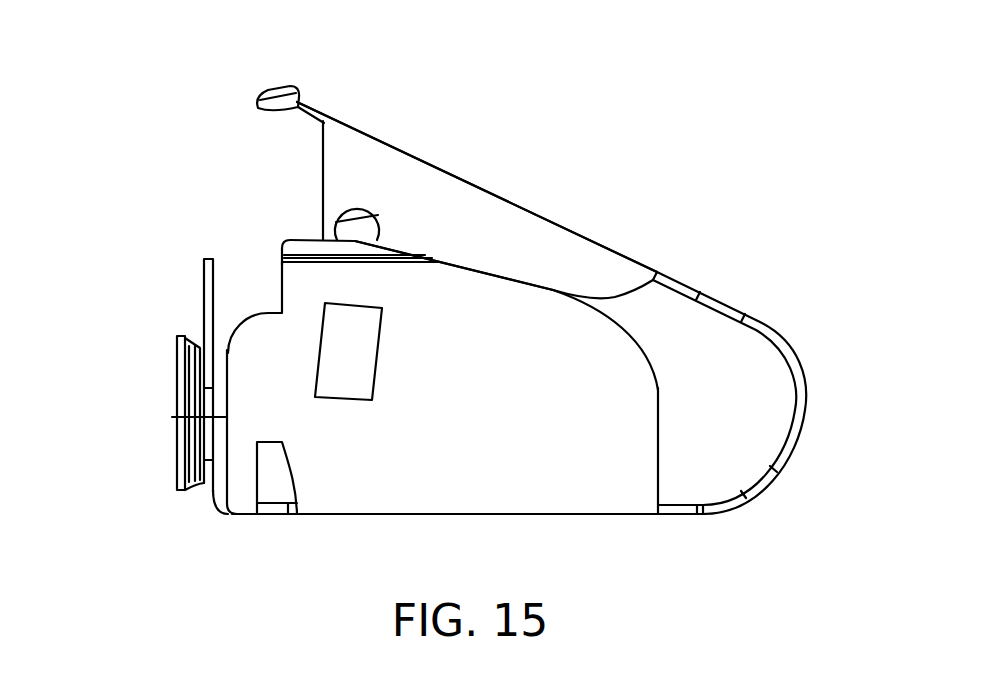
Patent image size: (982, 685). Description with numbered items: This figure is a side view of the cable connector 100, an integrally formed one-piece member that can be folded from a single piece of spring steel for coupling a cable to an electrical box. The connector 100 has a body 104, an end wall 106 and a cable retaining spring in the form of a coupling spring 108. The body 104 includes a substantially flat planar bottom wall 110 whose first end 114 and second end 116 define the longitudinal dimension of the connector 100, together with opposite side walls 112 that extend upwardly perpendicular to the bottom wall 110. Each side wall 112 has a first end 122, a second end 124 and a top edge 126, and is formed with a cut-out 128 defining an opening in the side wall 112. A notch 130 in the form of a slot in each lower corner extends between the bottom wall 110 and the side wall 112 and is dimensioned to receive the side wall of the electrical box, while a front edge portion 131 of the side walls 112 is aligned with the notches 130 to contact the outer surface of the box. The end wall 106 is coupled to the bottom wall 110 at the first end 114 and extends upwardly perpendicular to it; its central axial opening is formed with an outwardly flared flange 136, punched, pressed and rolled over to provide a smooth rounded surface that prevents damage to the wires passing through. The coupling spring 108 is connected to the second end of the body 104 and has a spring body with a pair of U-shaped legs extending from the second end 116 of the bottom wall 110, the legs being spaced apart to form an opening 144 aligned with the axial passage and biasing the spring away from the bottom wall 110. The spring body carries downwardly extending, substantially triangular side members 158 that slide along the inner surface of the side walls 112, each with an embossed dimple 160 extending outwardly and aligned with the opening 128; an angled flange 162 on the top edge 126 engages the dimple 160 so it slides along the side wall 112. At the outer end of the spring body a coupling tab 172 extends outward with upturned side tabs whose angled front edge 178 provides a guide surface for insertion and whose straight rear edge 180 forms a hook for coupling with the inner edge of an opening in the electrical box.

The cable connector 100 is at (694, 222).
The body 104 is at (405, 518).
The end wall 106 is at (202, 257).
The coupling spring 108 is at (484, 184).
The bottom wall 110 is at (560, 516).
The side walls 112 is at (583, 400).
The first end 114 is at (228, 516).
The second end 116 is at (658, 516).
The first end 122 is at (177, 417).
The second end 124 is at (658, 457).
The top edge 126 is at (472, 267).
The cut-out 128 is at (375, 355).
The notch 130 is at (273, 485).
The front edge portion 131 is at (282, 277).
The flared flange 136 is at (177, 337).
The opening 144 is at (790, 444).
The side members 158 is at (403, 188).
The dimple 160 is at (336, 222).
The angled flange 162 is at (284, 240).
The coupling tab 172 is at (298, 84).
The angled front edge 178 is at (266, 88).
The straight rear edge 180 is at (300, 101).